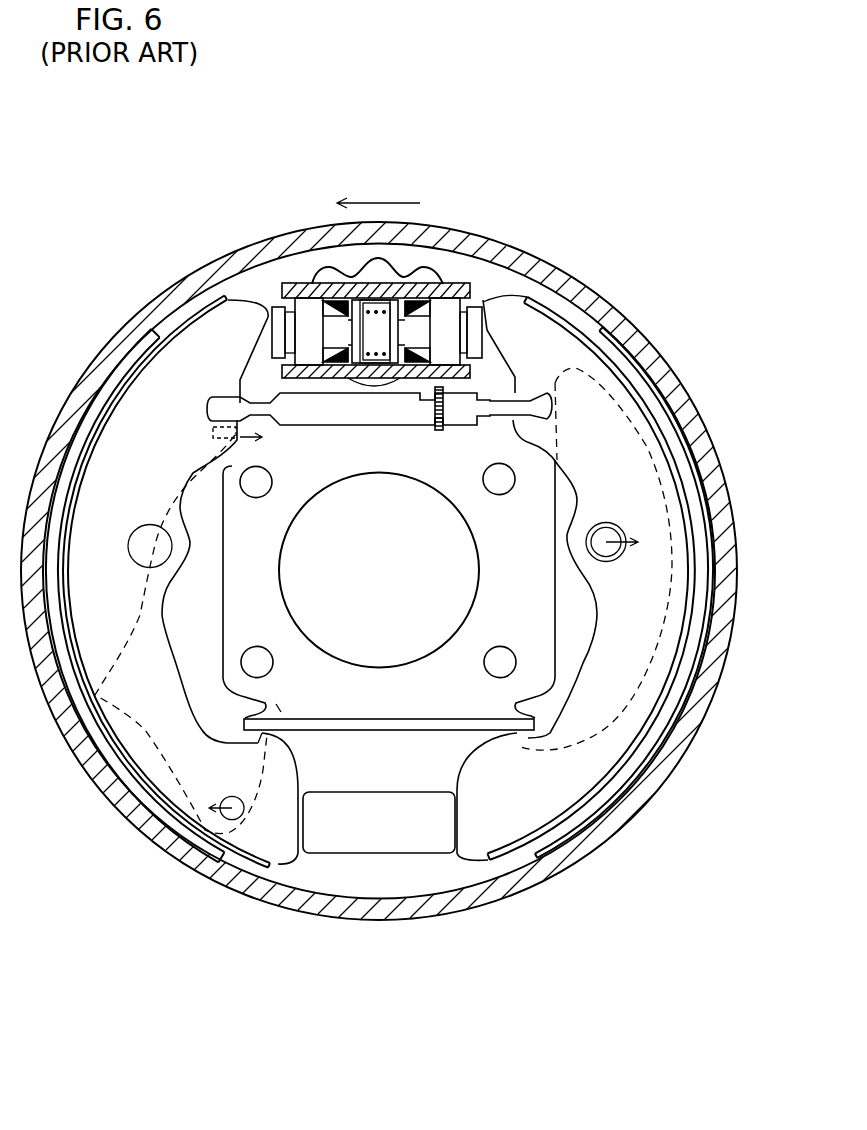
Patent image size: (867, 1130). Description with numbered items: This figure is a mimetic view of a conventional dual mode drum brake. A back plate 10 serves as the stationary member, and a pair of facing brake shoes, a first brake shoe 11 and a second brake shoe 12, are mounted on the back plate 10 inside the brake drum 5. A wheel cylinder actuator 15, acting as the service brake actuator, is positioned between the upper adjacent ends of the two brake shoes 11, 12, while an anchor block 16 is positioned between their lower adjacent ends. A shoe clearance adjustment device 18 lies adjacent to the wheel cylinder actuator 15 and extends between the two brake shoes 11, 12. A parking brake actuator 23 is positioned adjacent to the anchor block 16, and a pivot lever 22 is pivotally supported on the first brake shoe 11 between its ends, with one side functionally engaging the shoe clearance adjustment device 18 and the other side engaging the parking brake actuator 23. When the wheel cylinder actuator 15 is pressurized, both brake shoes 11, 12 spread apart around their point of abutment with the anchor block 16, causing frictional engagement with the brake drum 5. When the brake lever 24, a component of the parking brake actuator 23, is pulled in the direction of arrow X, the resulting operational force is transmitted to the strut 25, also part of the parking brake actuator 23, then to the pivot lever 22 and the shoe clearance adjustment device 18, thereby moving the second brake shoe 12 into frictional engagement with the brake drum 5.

The brake drum 5 is at (613, 307).
The back plate 10 is at (283, 598).
The first brake shoe 11 is at (557, 291).
The second brake shoe 12 is at (208, 298).
The wheel cylinder actuator 15 is at (397, 255).
The anchor block 16 is at (387, 836).
The shoe clearance adjustment device 18 is at (367, 439).
The pivot lever 22 is at (498, 586).
The parking brake actuator 23 is at (286, 692).
The brake lever 24 is at (211, 542).
The strut 25 is at (350, 722).